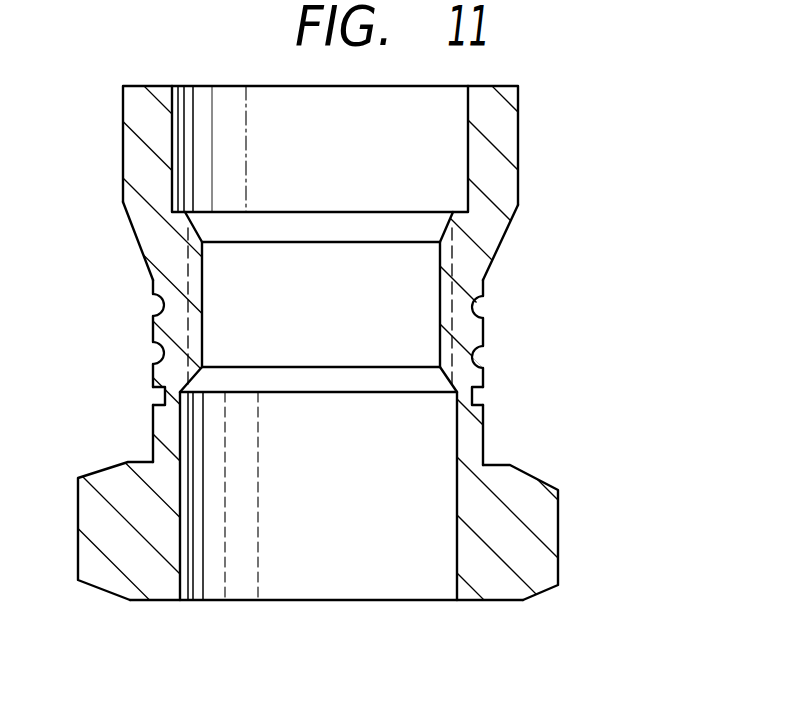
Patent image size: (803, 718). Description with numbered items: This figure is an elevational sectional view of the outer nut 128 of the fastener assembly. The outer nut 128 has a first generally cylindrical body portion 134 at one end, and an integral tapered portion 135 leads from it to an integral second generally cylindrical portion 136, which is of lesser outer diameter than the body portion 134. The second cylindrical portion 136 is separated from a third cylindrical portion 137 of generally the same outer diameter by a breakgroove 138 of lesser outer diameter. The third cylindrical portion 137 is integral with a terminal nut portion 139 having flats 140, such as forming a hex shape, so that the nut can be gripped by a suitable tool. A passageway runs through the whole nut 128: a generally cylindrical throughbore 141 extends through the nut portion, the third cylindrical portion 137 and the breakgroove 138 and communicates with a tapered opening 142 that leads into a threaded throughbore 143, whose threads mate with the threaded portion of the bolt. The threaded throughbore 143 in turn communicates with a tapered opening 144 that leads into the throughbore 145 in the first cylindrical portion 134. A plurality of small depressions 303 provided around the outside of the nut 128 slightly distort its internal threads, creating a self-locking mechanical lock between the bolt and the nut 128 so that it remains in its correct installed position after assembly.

The outer nut 128 is at (543, 213).
The first generally cylindrical body portion 134 is at (519, 147).
The tapered portion 135 is at (500, 243).
The second generally cylindrical portion 136 is at (485, 337).
The third cylindrical portion 137 is at (487, 445).
The breakgroove 138 is at (487, 400).
The terminal nut portion 139 is at (523, 599).
The flats 140 is at (559, 523).
The generally cylindrical throughbore 141 is at (457, 474).
The tapered opening 142 is at (442, 372).
The threaded throughbore 143 is at (440, 278).
The tapered opening 144 is at (455, 213).
The throughbore 145 is at (468, 144).
The small depressions 303 is at (156, 352).